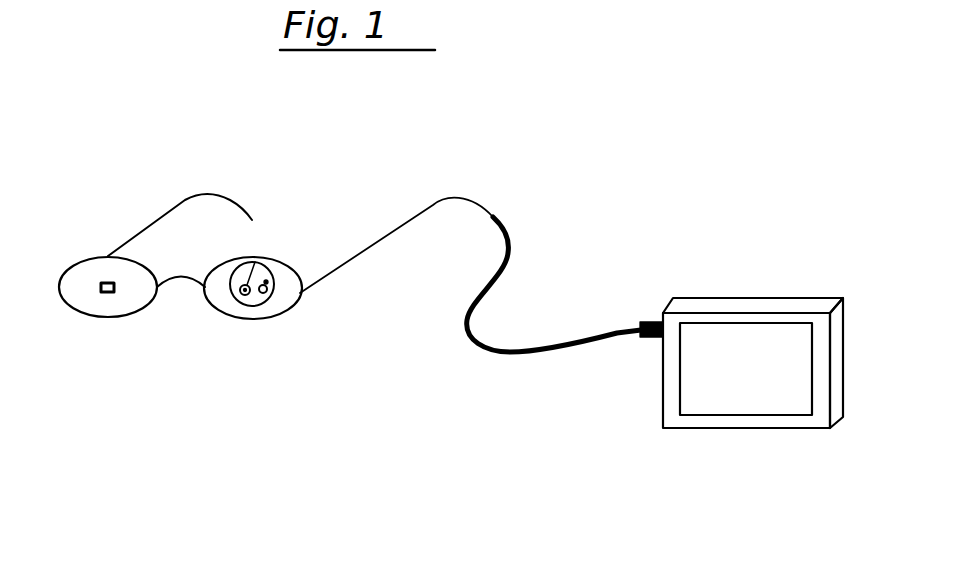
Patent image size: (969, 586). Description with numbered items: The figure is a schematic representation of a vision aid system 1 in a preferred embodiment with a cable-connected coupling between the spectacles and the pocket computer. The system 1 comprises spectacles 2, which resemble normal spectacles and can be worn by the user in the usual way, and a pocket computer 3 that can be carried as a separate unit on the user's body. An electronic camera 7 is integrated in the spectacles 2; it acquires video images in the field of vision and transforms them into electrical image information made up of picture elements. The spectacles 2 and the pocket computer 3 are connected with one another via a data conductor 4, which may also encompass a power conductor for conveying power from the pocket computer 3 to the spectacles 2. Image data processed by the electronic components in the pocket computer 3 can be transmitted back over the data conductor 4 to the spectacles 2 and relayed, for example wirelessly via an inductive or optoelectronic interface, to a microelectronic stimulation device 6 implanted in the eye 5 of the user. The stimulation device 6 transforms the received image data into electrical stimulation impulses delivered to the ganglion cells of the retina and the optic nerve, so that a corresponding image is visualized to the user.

The vision aid system 1 is at (541, 177).
The spectacles 2 is at (270, 322).
The pocket computer 3 is at (757, 298).
The data conductor 4 is at (517, 360).
The eye 5 is at (258, 263).
The microelectronic stimulation device 6 is at (270, 282).
The electronic camera 7 is at (108, 292).